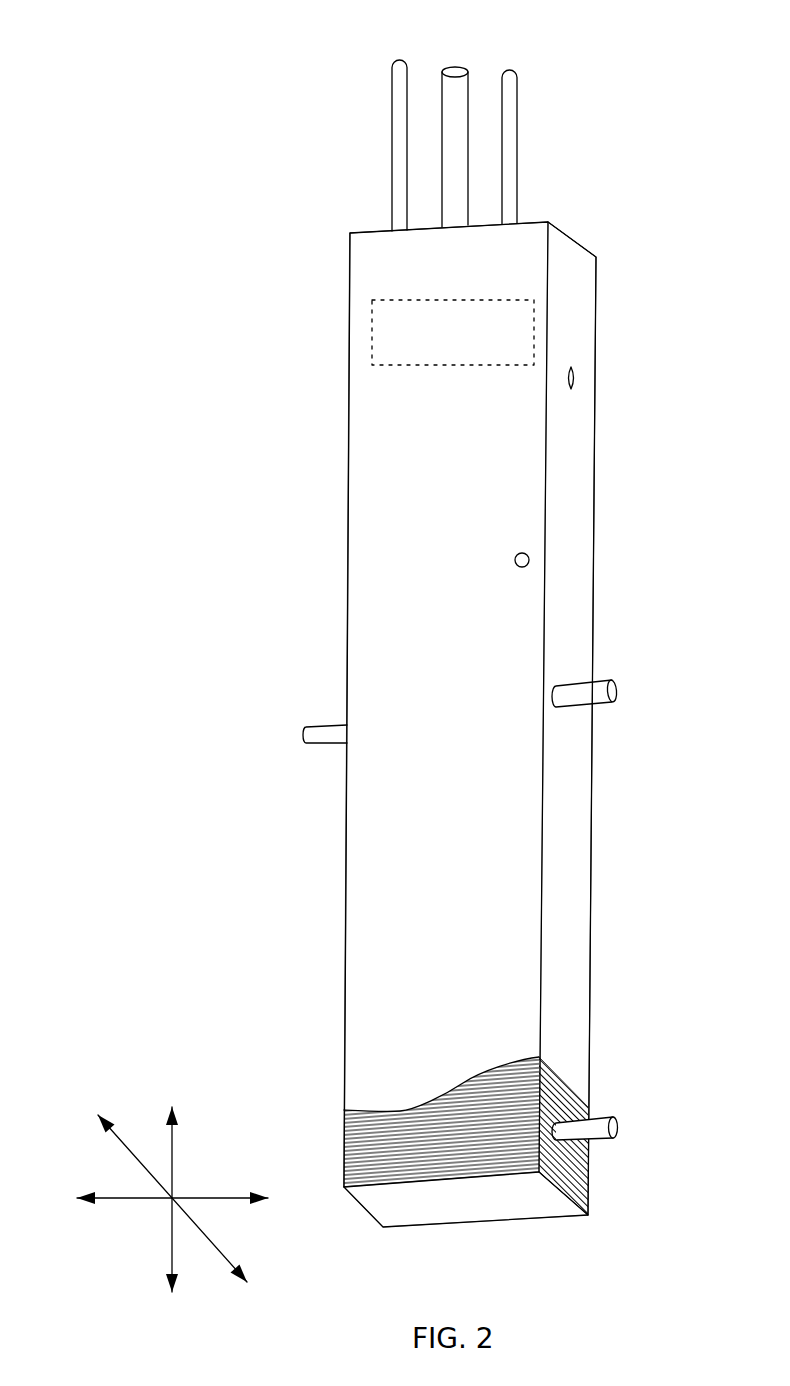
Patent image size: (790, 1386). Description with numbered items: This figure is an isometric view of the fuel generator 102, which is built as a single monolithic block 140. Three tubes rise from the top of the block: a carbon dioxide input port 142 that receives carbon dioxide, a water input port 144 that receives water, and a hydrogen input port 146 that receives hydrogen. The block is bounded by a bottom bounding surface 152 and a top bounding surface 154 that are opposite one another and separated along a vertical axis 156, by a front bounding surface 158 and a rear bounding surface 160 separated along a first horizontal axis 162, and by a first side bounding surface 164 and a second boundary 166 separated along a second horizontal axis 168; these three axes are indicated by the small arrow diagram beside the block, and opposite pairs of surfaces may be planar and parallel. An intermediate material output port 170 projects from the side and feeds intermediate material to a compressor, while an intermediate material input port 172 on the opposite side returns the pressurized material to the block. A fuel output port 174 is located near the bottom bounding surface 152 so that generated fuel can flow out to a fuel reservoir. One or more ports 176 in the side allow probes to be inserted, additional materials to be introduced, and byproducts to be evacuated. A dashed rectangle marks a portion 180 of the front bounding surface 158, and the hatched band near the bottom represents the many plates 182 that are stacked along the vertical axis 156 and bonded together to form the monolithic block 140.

The fuel generator 102 is at (218, 160).
The monolithic block 140 is at (348, 496).
The carbon dioxide input port 142 is at (455, 75).
The water input port 144 is at (400, 155).
The hydrogen input port 146 is at (506, 153).
The bottom bounding surface 152 is at (535, 1198).
The top bounding surface 154 is at (583, 250).
The vertical axis 156 is at (173, 1140).
The front bounding surface 158 is at (362, 930).
The rear bounding surface 160 is at (590, 1013).
The first horizontal axis 162 is at (128, 1148).
The first side bounding surface 164 is at (348, 621).
The second boundary 166 is at (567, 607).
The second horizontal axis 168 is at (124, 1198).
The intermediate material output port 170 is at (618, 692).
The intermediate material input port 172 is at (303, 738).
The fuel output port 174 is at (618, 1123).
The ports 176 is at (577, 377).
The portion of the front bounding surface 180 is at (373, 333).
The plates 182 is at (588, 1168).